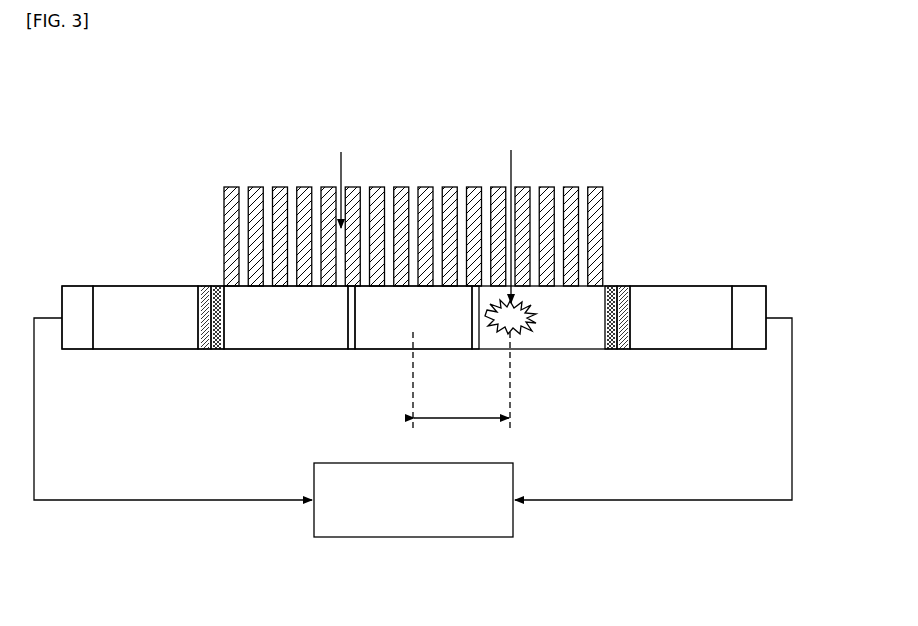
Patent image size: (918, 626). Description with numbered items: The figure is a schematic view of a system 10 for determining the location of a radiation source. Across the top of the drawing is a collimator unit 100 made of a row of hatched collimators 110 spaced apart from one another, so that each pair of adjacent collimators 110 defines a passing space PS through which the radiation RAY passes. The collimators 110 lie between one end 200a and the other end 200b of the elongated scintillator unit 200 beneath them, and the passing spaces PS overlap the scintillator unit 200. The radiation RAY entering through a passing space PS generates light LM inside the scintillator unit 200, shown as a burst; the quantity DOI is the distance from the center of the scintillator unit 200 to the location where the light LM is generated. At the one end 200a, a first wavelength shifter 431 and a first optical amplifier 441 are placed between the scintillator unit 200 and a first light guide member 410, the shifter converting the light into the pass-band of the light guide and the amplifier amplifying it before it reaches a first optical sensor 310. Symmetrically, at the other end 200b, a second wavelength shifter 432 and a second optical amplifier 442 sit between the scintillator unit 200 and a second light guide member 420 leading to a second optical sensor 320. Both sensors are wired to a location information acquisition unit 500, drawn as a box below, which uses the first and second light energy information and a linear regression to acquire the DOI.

The system 10 is at (124, 72).
The collimator unit 100 is at (221, 177).
The collimator 110 is at (592, 190).
The scintillator unit 200 is at (565, 340).
The one end of the scintillator unit 200a is at (612, 300).
The other end of the scintillator unit 200b is at (213, 308).
The first optical sensor 310 is at (748, 292).
The second optical sensor 320 is at (78, 292).
The first light guide member 410 is at (683, 292).
The second light guide member 420 is at (142, 292).
The first wavelength shifter 431 is at (612, 349).
The second wavelength shifter 432 is at (217, 349).
The first optical amplifier 441 is at (620, 349).
The second optical amplifier 442 is at (203, 349).
The location information acquisition unit 500 is at (418, 537).
The passing space PS is at (340, 177).
The radiation RAY is at (510, 213).
The light LM is at (522, 336).
The element DOI is at (461, 389).